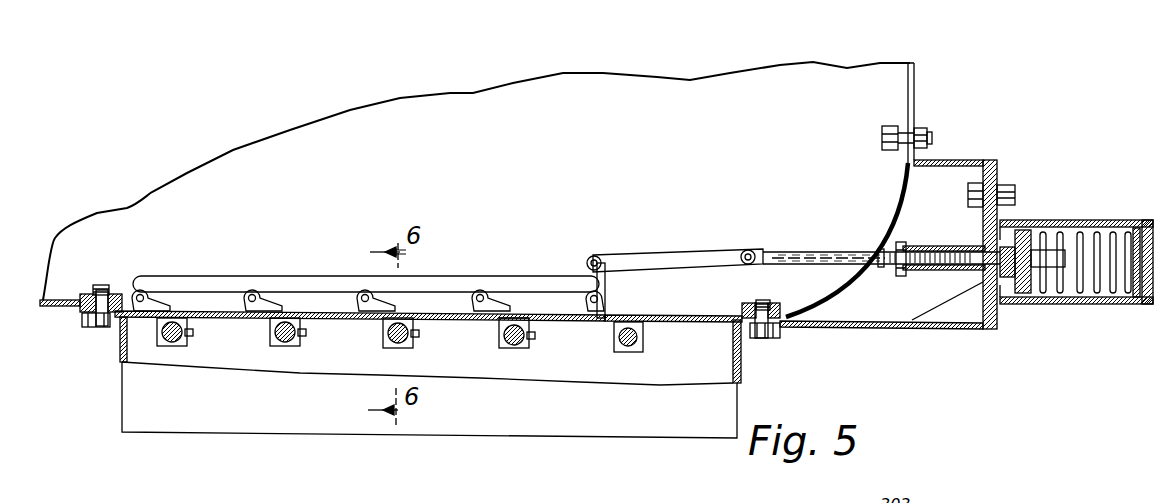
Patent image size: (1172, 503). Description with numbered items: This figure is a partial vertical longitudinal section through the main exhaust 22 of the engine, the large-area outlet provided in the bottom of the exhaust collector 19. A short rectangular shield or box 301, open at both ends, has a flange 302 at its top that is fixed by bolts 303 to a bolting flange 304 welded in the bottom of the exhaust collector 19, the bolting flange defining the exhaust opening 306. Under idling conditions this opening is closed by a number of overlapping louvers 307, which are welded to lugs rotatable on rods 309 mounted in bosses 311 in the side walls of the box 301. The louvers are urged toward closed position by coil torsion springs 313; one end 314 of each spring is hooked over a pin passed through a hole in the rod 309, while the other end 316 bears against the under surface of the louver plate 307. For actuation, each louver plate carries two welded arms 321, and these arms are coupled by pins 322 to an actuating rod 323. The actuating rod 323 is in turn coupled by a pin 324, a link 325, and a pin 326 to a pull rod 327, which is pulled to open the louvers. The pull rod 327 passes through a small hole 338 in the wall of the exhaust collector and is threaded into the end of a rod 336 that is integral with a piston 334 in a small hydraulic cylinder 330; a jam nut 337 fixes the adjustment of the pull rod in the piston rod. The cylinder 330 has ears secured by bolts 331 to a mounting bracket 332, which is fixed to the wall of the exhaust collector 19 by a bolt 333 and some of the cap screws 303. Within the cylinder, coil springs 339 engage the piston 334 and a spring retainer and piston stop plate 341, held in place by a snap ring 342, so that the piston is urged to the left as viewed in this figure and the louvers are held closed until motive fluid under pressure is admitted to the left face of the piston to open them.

The exhaust collector 19 is at (913, 96).
The main exhaust 22 is at (118, 405).
The rectangular shield or box 301 is at (740, 410).
The flange 302 is at (778, 320).
The bolts 303 is at (102, 330).
The bolting flange 304 is at (785, 313).
The exhaust opening 306 is at (723, 296).
The louvers 307 is at (330, 317).
The rods 309 is at (173, 347).
The bosses 311 is at (414, 342).
The coil torsion springs 313 is at (508, 346).
The end of torsion spring 314 is at (530, 340).
The other end of torsion spring 316 is at (527, 320).
The arms 321 is at (270, 305).
The pins 322 is at (253, 293).
The actuating rod 323 is at (233, 283).
The pin 324 is at (596, 256).
The link 325 is at (657, 266).
The pin 326 is at (751, 250).
The pull rod 327 is at (810, 252).
The hydraulic cylinder 330 is at (1073, 220).
The bolts 331 is at (1016, 196).
The mounting bracket 332 is at (968, 161).
The bolt 333 is at (922, 138).
The piston 334 is at (1028, 302).
The rod 336 is at (940, 246).
The jam nut 337 is at (897, 276).
The hole 338 is at (883, 250).
The coil springs 339 is at (1078, 297).
The spring retainer and piston stop plate 341 is at (1136, 230).
The snap ring 342 is at (1146, 304).